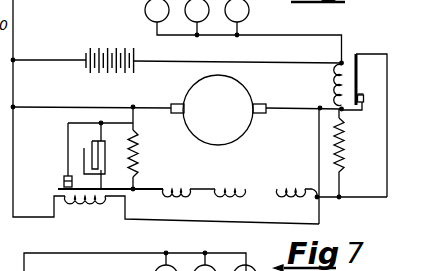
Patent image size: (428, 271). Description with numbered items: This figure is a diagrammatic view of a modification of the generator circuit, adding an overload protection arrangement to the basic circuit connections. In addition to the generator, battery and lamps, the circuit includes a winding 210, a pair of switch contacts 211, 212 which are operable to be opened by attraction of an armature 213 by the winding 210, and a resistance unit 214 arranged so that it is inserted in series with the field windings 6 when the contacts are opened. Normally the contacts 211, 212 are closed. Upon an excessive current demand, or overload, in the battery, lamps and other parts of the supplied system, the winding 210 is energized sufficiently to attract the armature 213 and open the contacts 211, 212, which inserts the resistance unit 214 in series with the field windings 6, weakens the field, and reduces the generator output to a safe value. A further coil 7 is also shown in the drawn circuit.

The winding 210 is at (335, 89).
The switch contact 211 is at (358, 95).
The switch contact 212 is at (364, 98).
The armature 213 is at (359, 59).
The resistance unit 214 is at (345, 142).
The field winding 6 is at (166, 188).
The coil 7 is at (101, 205).